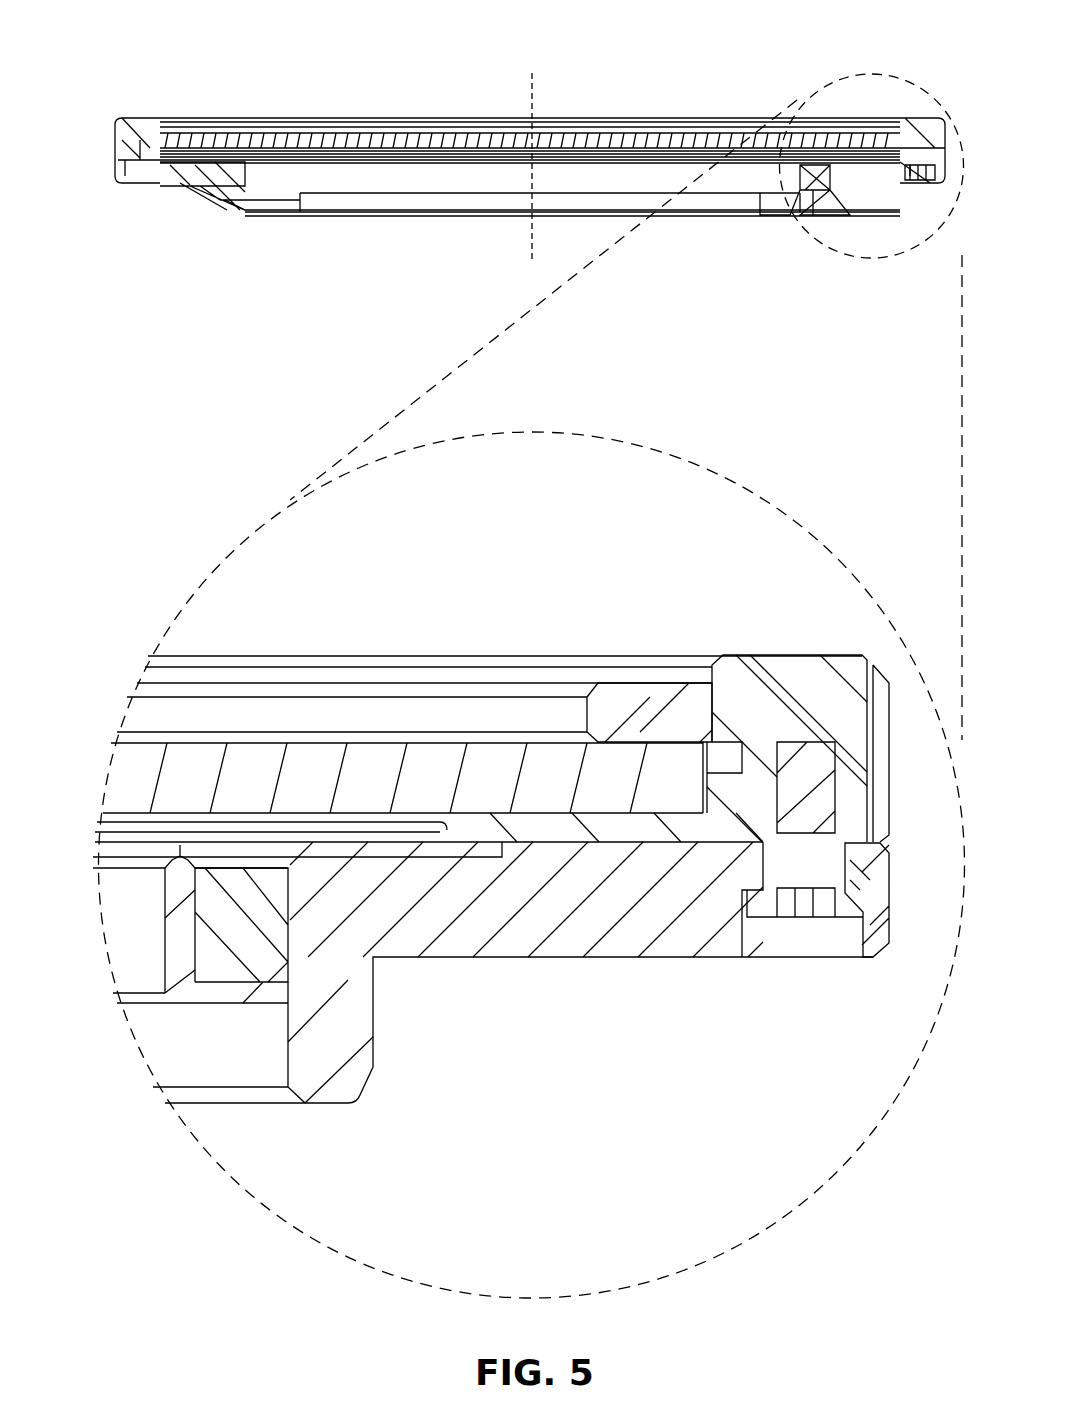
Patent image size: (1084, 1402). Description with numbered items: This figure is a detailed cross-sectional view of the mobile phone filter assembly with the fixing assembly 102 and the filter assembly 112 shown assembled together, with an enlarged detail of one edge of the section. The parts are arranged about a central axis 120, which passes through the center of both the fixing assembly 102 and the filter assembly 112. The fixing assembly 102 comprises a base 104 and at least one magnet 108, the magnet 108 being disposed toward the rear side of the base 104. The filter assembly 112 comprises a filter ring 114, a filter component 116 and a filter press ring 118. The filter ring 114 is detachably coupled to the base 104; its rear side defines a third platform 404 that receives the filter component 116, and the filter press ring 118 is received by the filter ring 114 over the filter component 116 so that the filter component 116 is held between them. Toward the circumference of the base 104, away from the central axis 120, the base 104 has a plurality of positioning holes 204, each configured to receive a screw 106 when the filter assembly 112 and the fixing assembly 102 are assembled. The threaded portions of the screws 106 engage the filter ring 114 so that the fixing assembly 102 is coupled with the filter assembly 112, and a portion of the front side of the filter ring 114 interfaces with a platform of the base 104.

The fixing assembly 102 is at (137, 196).
The base 104 is at (648, 957).
The screw 106 is at (835, 915).
The magnet 108 is at (218, 965).
The filter assembly 112 is at (152, 110).
The filter ring 114 is at (775, 662).
The filter component 116 is at (490, 745).
The filter press ring 118 is at (613, 685).
The central axis 120 is at (532, 80).
The positioning hole 204 is at (785, 935).
The third platform 404 is at (545, 843).